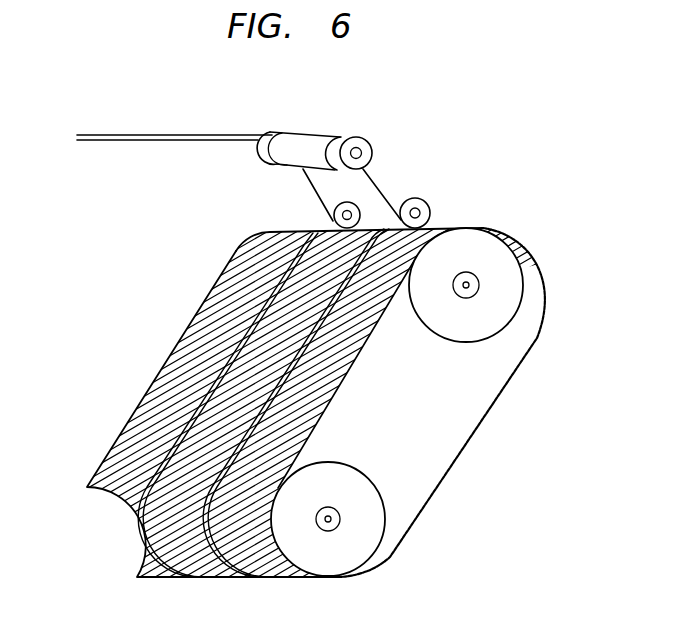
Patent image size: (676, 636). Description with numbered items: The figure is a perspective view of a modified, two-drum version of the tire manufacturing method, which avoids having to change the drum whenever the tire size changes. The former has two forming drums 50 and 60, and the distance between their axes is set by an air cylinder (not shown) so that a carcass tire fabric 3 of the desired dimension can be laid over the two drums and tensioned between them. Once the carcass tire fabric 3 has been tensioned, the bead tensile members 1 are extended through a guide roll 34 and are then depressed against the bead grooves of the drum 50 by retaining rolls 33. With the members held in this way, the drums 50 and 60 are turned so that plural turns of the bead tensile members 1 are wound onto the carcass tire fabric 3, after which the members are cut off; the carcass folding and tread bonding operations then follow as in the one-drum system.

The bead tensile members 1 is at (223, 134).
The carcass tire fabric 3 is at (279, 316).
The retaining rolls 33 is at (350, 213).
The guide roll 34 is at (359, 143).
The forming drum 50 is at (483, 253).
The forming drum 60 is at (352, 550).